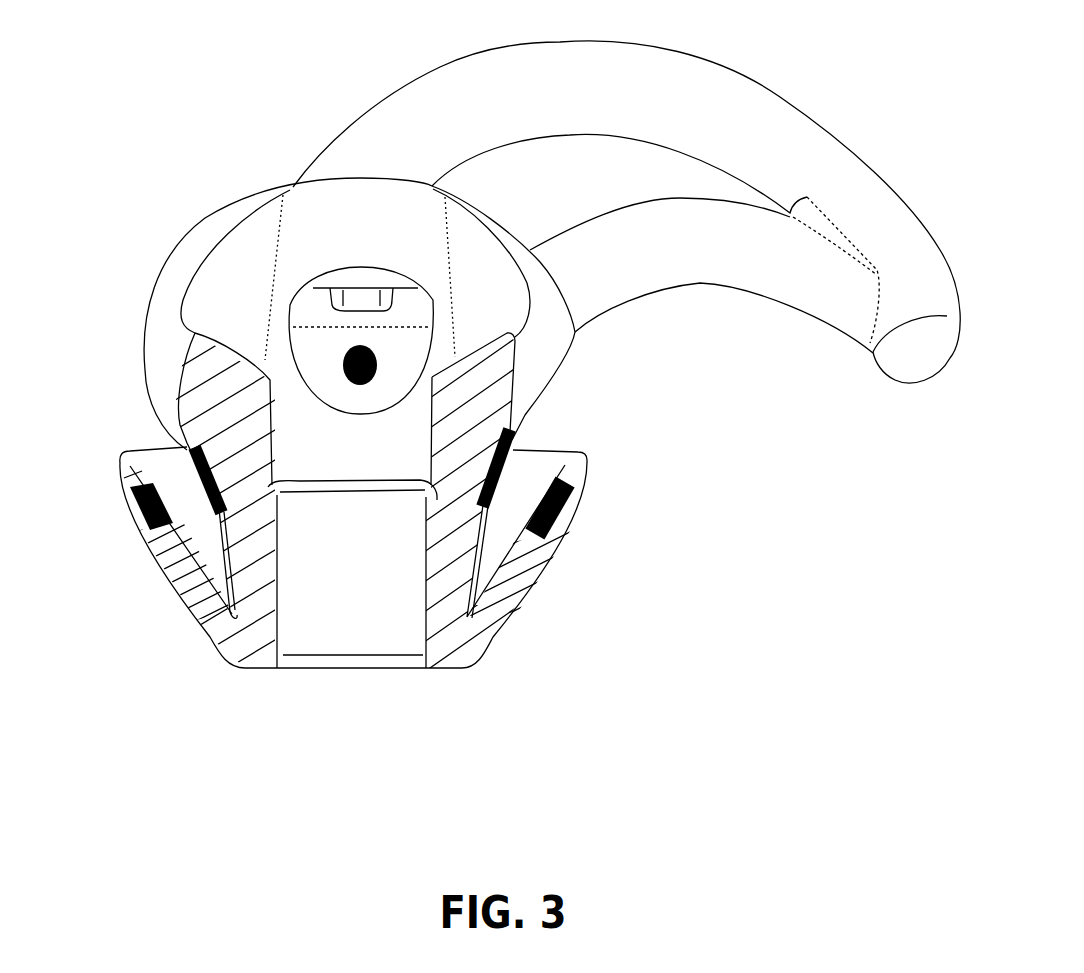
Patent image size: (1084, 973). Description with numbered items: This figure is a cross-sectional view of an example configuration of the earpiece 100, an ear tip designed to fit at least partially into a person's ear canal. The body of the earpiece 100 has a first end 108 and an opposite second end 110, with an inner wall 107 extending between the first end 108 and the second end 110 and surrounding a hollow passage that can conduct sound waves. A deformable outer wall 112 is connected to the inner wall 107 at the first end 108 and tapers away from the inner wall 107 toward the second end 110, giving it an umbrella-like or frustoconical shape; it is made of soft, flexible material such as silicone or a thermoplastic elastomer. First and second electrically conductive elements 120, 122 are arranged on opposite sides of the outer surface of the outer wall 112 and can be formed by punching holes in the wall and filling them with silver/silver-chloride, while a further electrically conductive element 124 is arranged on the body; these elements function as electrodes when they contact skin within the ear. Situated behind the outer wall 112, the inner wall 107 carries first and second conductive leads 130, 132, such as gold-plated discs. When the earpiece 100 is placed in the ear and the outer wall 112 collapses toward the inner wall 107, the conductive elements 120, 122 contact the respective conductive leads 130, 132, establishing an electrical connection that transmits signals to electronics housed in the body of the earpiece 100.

The earpiece 100 is at (292, 36).
The second end 110 is at (172, 157).
The electrically conductive element 124 is at (337, 362).
The first end 108 is at (430, 693).
The outer wall 112 is at (183, 600).
The first electrically conductive element 120 is at (127, 513).
The second electrically conductive element 122 is at (573, 517).
The first conductive lead 130 is at (183, 473).
The second conductive lead 132 is at (505, 473).
The inner wall 107 is at (487, 537).